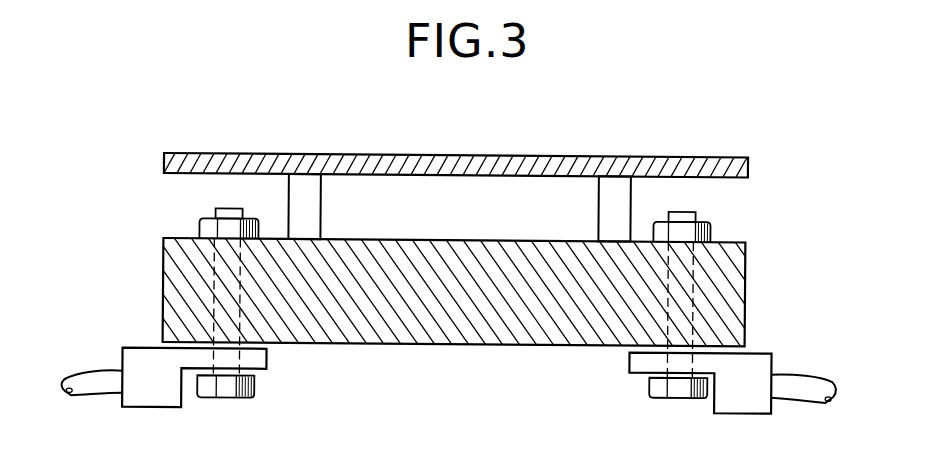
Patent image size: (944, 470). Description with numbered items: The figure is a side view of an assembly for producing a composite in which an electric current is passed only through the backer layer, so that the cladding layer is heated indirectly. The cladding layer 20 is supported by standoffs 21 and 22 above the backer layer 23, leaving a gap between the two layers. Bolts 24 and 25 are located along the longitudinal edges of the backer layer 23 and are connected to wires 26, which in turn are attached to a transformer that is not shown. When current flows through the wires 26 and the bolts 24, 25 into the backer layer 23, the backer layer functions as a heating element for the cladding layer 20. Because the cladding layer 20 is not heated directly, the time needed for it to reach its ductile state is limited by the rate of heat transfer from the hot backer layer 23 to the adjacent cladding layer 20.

The cladding layer 20 is at (520, 154).
The standoff 21 is at (320, 196).
The standoff 22 is at (598, 199).
The backer layer 23 is at (517, 342).
The bolt 24 is at (233, 397).
The bolt 25 is at (675, 394).
The wires 26 is at (107, 369).